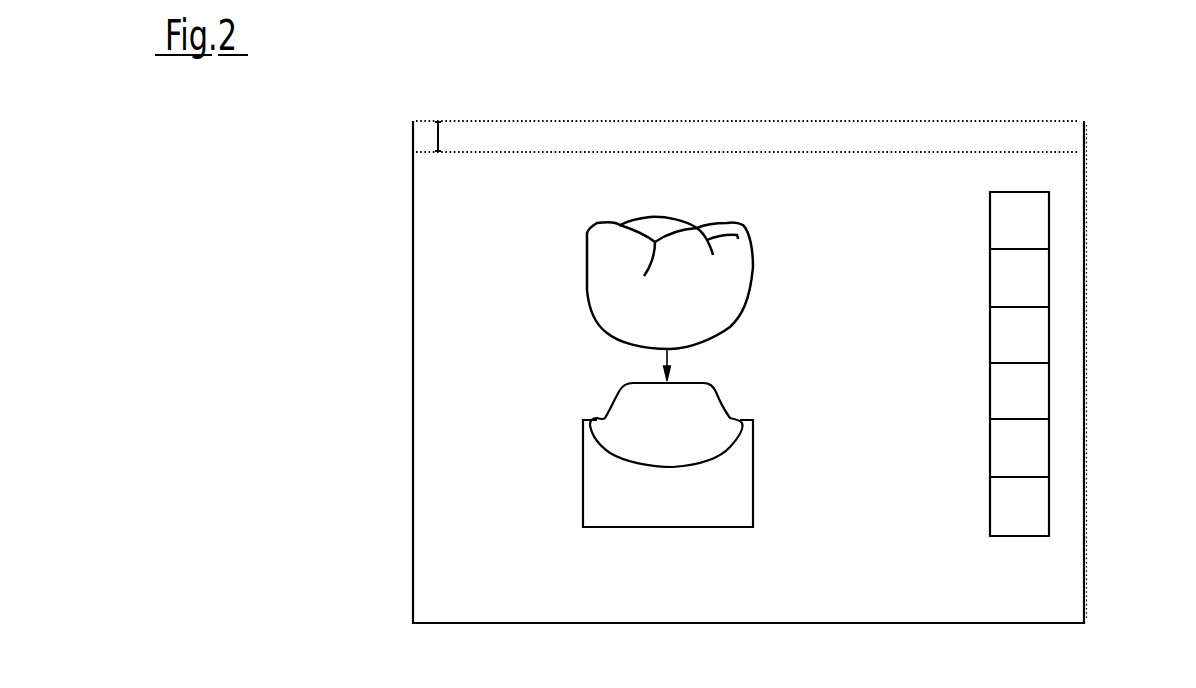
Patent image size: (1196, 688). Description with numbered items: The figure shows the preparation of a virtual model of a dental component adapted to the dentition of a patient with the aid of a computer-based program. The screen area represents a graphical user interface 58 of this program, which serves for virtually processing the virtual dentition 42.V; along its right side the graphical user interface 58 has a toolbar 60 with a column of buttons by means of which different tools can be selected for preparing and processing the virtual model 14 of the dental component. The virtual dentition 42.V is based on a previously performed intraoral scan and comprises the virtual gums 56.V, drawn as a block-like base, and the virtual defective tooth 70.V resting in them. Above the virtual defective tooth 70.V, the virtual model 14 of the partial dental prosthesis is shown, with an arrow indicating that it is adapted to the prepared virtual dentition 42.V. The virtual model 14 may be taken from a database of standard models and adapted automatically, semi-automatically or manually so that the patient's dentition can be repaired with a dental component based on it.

The virtual model 14 is at (713, 303).
The virtual model of the dentition 42.V is at (669, 445).
The virtual gums 56.V is at (717, 502).
The graphical user interface 58 is at (423, 133).
The toolbar 60 is at (1050, 224).
The virtual defective tooth 70.V is at (705, 430).